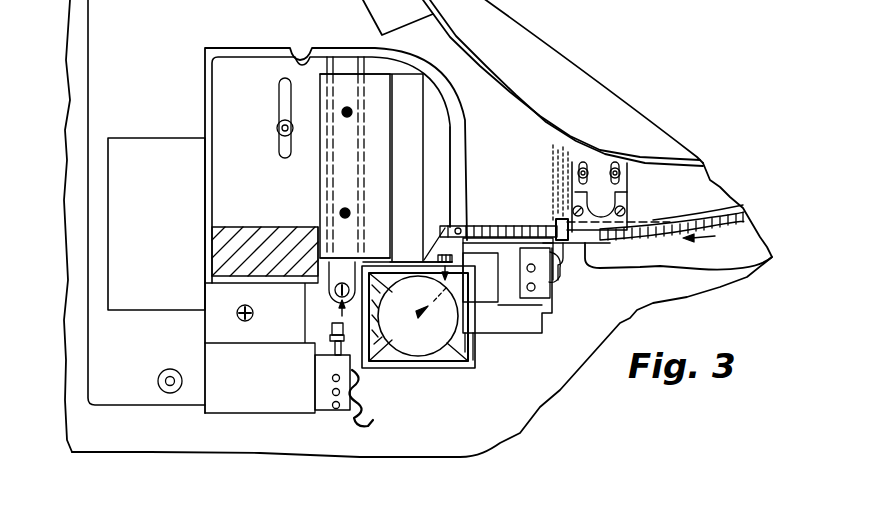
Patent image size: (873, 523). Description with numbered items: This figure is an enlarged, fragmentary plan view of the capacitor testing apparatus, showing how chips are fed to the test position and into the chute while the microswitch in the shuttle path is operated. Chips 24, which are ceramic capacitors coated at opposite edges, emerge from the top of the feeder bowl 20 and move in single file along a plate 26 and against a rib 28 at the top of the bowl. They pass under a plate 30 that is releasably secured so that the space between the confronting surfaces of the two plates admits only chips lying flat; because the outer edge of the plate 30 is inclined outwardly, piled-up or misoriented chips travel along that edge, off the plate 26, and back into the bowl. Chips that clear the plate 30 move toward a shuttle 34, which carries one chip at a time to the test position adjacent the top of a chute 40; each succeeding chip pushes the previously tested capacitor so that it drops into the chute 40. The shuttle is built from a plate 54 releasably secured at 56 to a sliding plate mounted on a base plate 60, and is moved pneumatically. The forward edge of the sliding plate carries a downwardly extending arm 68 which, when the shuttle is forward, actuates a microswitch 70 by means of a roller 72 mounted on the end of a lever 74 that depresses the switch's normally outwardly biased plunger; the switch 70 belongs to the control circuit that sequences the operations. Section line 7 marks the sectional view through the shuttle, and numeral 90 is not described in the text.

The section line 7- 7 is at (360, 47).
The feeder bowl 20 is at (520, 73).
The chips 24 is at (478, 227).
The plate 26 is at (757, 243).
The rib 28 is at (733, 208).
The plate 30 is at (627, 200).
The shuttle 34 is at (418, 173).
The chute 40 is at (432, 370).
The plate 54 is at (445, 150).
The releasable securing means 56 is at (347, 118).
The base plate 60 is at (258, 110).
The arm 68 is at (338, 282).
The microswitch 70 is at (320, 393).
The roller 72 is at (332, 326).
The lever 74 is at (336, 348).
The element 90 is at (718, 521).